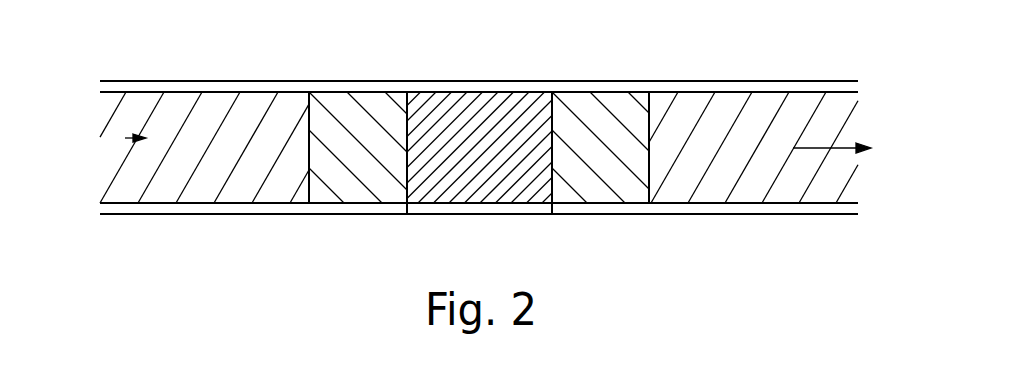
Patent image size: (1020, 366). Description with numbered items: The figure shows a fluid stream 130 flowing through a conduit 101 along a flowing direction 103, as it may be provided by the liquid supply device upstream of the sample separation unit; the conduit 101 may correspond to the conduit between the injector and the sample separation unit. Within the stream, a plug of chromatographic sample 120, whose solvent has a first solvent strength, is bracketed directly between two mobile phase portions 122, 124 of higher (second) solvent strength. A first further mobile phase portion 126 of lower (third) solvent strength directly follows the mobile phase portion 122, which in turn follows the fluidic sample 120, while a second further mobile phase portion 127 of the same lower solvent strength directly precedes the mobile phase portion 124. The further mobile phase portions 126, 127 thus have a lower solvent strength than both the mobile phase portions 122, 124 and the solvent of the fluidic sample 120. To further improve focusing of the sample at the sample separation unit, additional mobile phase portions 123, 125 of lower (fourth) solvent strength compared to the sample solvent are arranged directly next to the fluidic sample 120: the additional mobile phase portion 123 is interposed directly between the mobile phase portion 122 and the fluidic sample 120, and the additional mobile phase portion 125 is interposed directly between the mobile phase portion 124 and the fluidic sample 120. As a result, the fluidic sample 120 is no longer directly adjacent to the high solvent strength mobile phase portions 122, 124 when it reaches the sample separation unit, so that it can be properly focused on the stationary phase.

The conduit 101 is at (703, 211).
The flowing direction 103 is at (840, 147).
The plug of chromatographic sample 120 is at (492, 105).
The mobile phase portion 122 is at (373, 105).
The further mobile phase portion 123 is at (407, 215).
The mobile phase portion 124 is at (600, 105).
The further mobile phase portion 125 is at (552, 215).
The further mobile phase portion 126 is at (223, 105).
The further mobile phase portion 127 is at (695, 105).
The fluid stream 130 is at (125, 138).